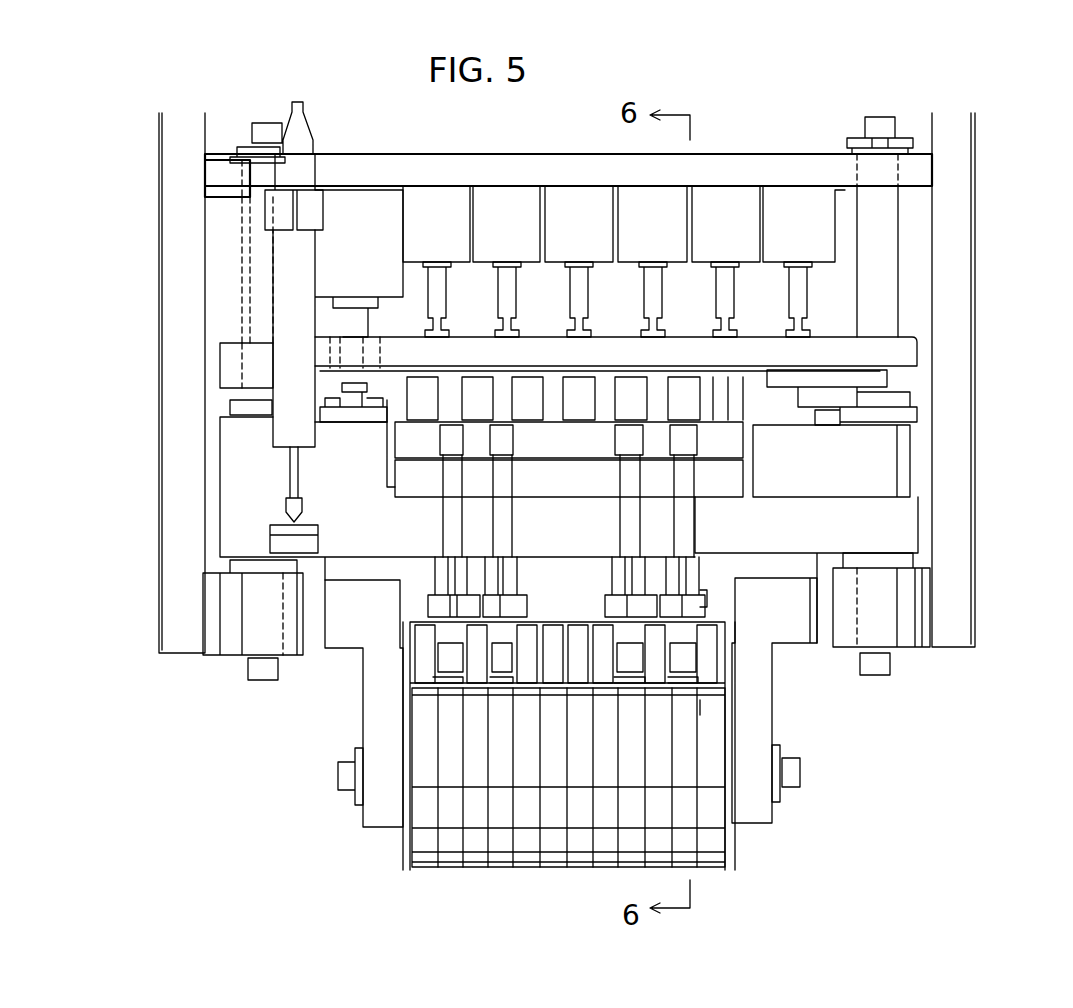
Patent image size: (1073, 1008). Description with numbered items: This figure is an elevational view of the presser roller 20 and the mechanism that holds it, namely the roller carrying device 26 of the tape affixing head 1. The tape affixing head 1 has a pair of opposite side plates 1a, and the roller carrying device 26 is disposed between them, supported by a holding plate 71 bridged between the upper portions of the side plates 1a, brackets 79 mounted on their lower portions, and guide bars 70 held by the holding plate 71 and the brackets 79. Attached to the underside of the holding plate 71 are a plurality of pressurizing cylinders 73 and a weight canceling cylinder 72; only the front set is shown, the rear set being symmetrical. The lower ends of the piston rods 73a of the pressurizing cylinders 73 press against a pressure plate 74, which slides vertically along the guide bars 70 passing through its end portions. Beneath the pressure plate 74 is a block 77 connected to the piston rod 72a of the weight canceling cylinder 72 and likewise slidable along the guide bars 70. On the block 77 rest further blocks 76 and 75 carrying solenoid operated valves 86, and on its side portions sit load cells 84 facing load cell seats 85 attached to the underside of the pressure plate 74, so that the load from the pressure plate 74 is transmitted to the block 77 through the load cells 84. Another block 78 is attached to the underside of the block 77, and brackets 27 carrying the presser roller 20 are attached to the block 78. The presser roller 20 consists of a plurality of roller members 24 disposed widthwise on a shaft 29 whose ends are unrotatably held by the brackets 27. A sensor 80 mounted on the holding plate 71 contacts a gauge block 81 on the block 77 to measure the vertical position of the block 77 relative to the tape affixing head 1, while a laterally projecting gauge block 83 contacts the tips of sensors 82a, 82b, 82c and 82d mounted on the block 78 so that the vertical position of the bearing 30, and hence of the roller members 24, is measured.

The tape affixing head 1 is at (140, 481).
The side plates 1a is at (183, 421).
The presser roller 20 is at (757, 858).
The roller members 24 is at (713, 832).
The roller carrying device 26 is at (889, 96).
The brackets 27 is at (374, 730).
The shaft 29 is at (405, 782).
The bearing 30 is at (700, 714).
The guide bars 70 is at (252, 322).
The holding plate 71 is at (477, 160).
The weight canceling cylinders 72 is at (332, 270).
The piston rods 72a is at (350, 326).
The pressurizing cylinders 73 is at (742, 160).
The piston rods 73a is at (448, 294).
The pressure plate 74 is at (905, 350).
The block 75 is at (733, 437).
The block 76 is at (718, 478).
The block 77 is at (242, 518).
The block 78 is at (798, 567).
The brackets 79 is at (232, 640).
The sensor 80 is at (303, 168).
The gauge block 81 is at (278, 543).
The sensor 82a is at (448, 536).
The sensor 82b is at (680, 530).
The sensor 82c is at (500, 540).
The sensor 82d is at (640, 514).
The gauge block 83 is at (442, 652).
The load cells 84 is at (883, 470).
The load cell seats 85 is at (820, 402).
The solenoid operated valves 86 is at (726, 380).